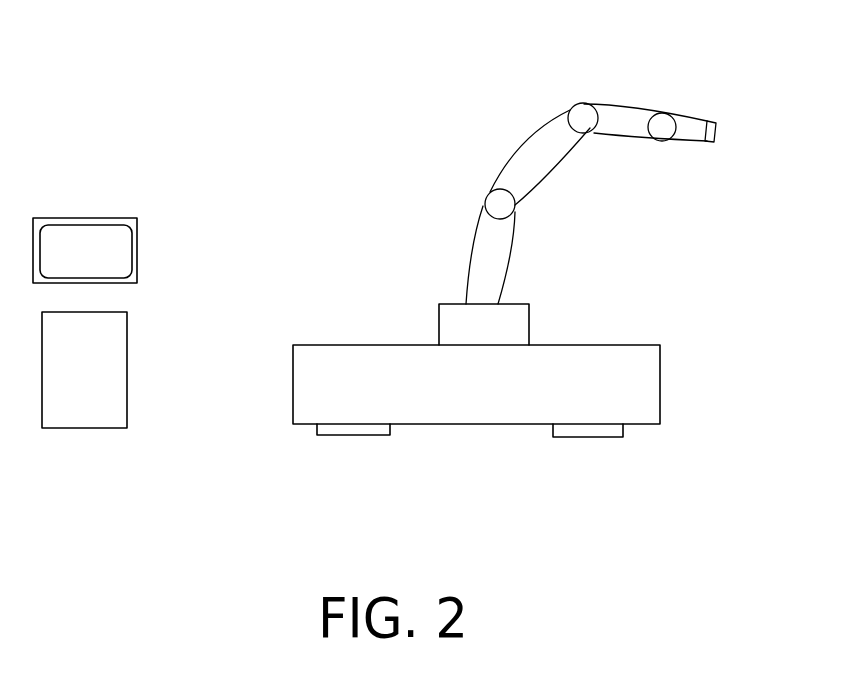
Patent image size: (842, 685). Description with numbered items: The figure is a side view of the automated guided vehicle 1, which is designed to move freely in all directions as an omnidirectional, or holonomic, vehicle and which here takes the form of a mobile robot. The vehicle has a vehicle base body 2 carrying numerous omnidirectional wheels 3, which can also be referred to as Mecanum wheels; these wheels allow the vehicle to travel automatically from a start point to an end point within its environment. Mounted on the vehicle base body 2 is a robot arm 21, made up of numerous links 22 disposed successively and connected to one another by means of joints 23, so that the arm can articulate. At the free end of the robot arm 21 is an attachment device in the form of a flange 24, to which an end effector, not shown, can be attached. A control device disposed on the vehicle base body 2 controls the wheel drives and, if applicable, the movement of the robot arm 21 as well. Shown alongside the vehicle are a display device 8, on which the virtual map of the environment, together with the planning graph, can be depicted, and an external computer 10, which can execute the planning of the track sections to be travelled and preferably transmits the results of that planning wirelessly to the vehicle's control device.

The automated guided vehicle 1 is at (345, 169).
The vehicle base body 2 is at (476, 390).
The omnidirectional wheels 3 is at (570, 427).
The display device 8 is at (91, 259).
The external computer 10 is at (98, 374).
The robot arm 21 is at (634, 241).
The links 22 is at (483, 248).
The joints 23 is at (500, 213).
The flange 24 is at (716, 128).